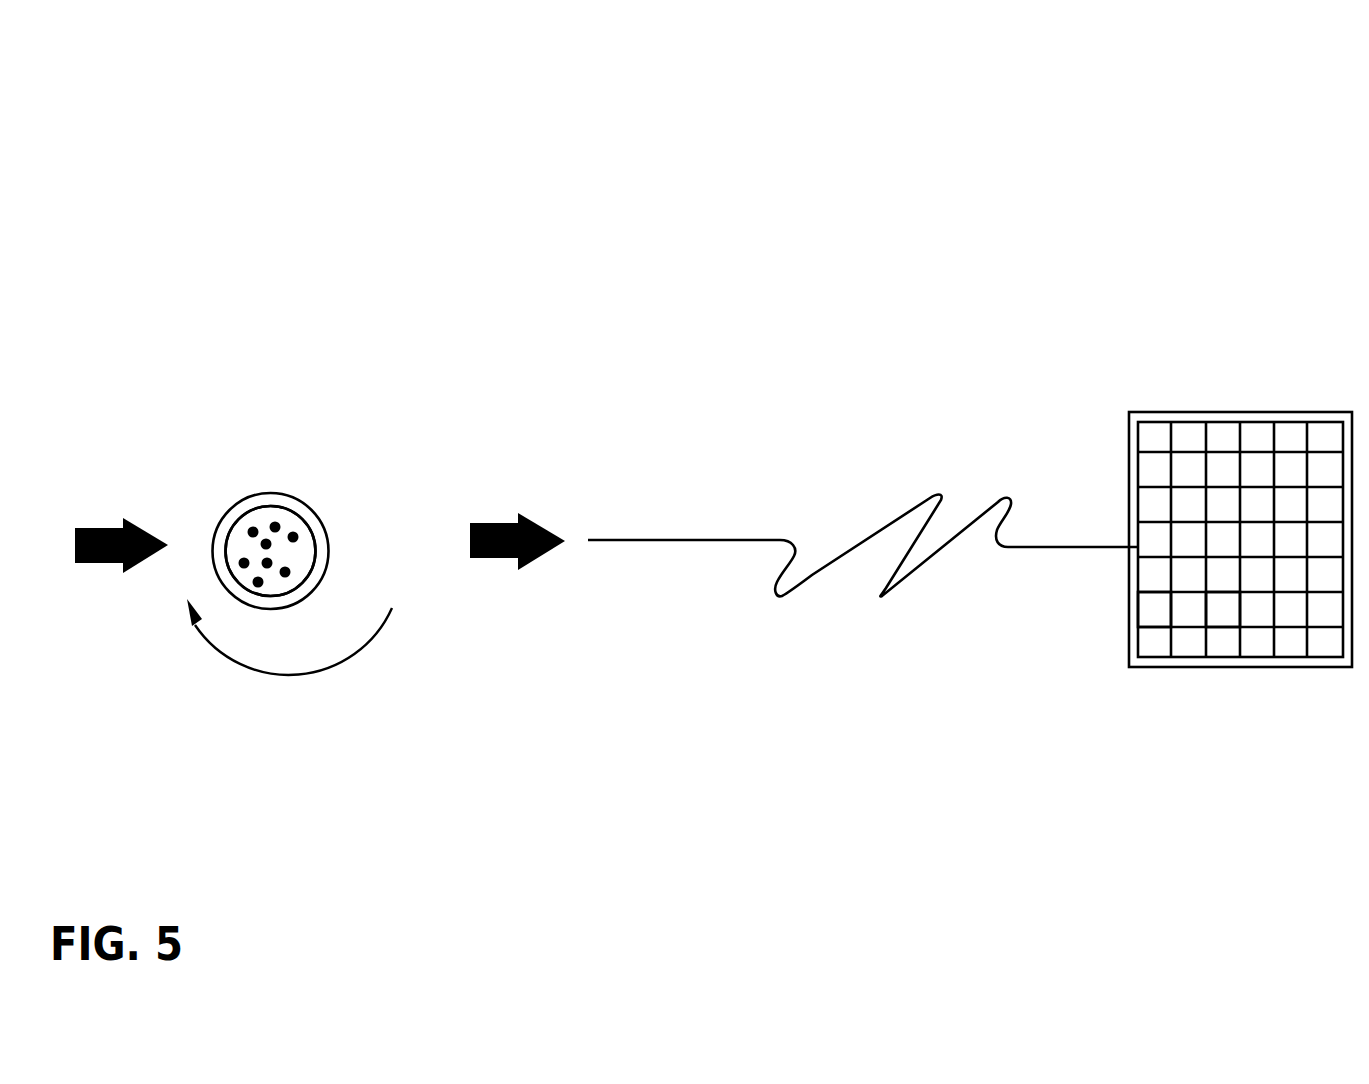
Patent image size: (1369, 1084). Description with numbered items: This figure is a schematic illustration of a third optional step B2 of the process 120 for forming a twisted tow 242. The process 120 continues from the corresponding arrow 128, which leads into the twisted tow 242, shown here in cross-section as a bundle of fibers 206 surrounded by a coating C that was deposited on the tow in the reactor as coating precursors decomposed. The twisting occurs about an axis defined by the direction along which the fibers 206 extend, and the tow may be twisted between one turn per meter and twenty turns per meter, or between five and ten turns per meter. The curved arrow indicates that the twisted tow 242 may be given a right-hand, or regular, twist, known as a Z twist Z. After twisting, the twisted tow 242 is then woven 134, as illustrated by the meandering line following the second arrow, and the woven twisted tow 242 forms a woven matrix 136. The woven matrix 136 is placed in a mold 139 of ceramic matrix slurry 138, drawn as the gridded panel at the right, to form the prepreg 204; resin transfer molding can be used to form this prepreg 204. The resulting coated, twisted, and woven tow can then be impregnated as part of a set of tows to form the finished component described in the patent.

The process 120 is at (130, 70).
The third optional step B2 is at (114, 468).
The arrow 128 is at (123, 568).
The twisted tow 242 is at (296, 470).
The coating C is at (262, 507).
The fibers 206 is at (293, 538).
The Z twist Z is at (313, 675).
The woven 134 is at (839, 633).
The mold 139 is at (1302, 412).
The prepreg 204 is at (1253, 412).
The woven matrix 136 is at (1171, 597).
The ceramic matrix slurry 138 is at (1223, 600).